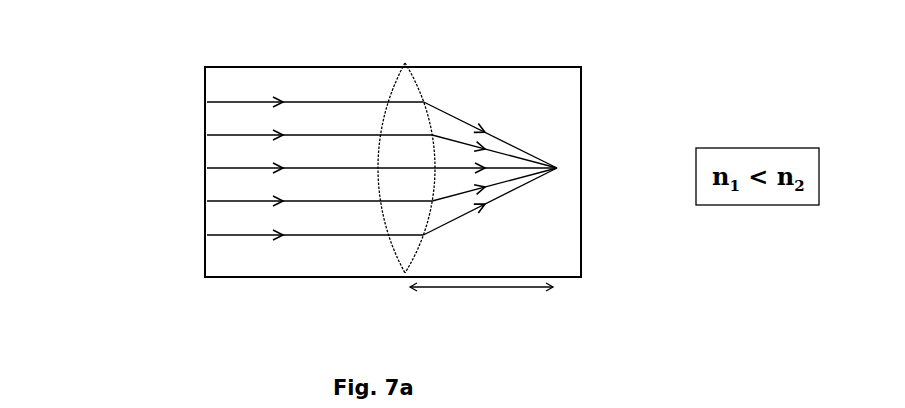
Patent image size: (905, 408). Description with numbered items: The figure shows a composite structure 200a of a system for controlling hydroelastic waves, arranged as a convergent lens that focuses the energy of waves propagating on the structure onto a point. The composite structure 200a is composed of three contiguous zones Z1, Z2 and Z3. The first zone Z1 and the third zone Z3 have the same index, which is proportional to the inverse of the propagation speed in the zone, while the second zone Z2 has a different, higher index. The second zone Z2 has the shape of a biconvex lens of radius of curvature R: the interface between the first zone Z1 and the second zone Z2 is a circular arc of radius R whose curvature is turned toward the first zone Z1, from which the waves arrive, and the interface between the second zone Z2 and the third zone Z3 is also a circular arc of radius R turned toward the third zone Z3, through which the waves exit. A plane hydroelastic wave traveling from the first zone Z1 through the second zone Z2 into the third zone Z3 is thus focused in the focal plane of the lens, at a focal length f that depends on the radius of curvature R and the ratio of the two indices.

The composite structure 200a is at (177, 87).
The first zone Z1 is at (395, 58).
The second zone Z2 is at (402, 257).
The third zone Z3 is at (496, 87).
The radius of curvature R is at (388, 97).
The focal length f is at (481, 262).